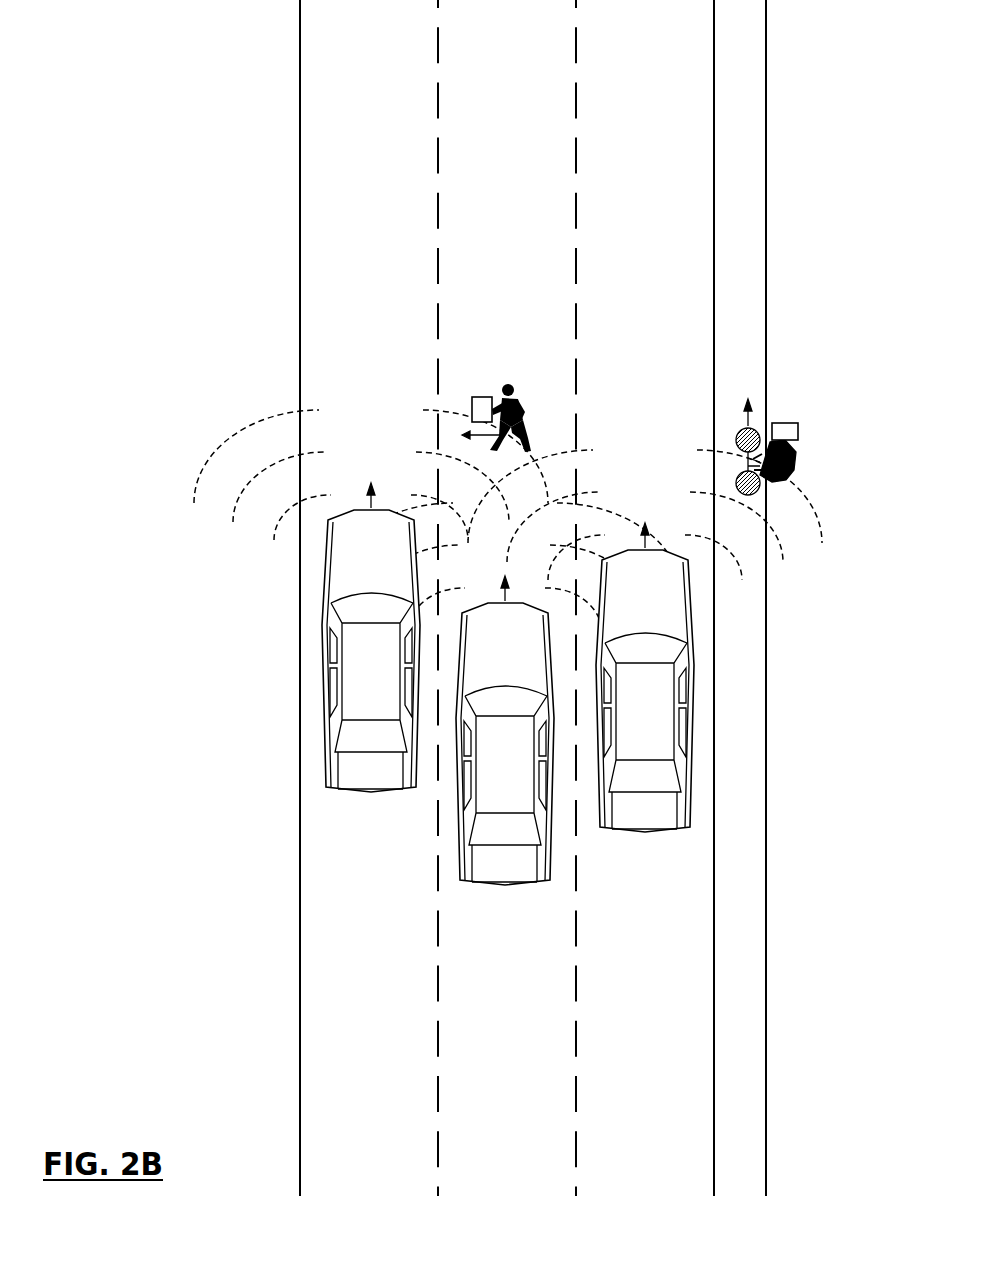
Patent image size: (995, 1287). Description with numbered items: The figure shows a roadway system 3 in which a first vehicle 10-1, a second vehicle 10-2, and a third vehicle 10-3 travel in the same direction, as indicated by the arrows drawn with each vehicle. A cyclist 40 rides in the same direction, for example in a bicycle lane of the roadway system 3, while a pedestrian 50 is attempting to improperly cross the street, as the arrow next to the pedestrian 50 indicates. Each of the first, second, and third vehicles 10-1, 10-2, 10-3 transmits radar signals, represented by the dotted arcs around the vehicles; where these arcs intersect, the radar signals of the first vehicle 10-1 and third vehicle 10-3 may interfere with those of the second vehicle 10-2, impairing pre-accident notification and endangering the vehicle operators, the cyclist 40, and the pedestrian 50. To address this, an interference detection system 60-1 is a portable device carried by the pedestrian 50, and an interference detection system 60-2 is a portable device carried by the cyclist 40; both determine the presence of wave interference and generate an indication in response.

The roadway system 3 is at (128, 107).
The first vehicle 10-1 is at (352, 792).
The second vehicle 10-2 is at (490, 886).
The third vehicle 10-3 is at (626, 831).
The cyclist 40 is at (792, 448).
The pedestrian 50 is at (507, 384).
The interference detection system 60-1 is at (478, 396).
The interference detection system 60-2 is at (798, 423).